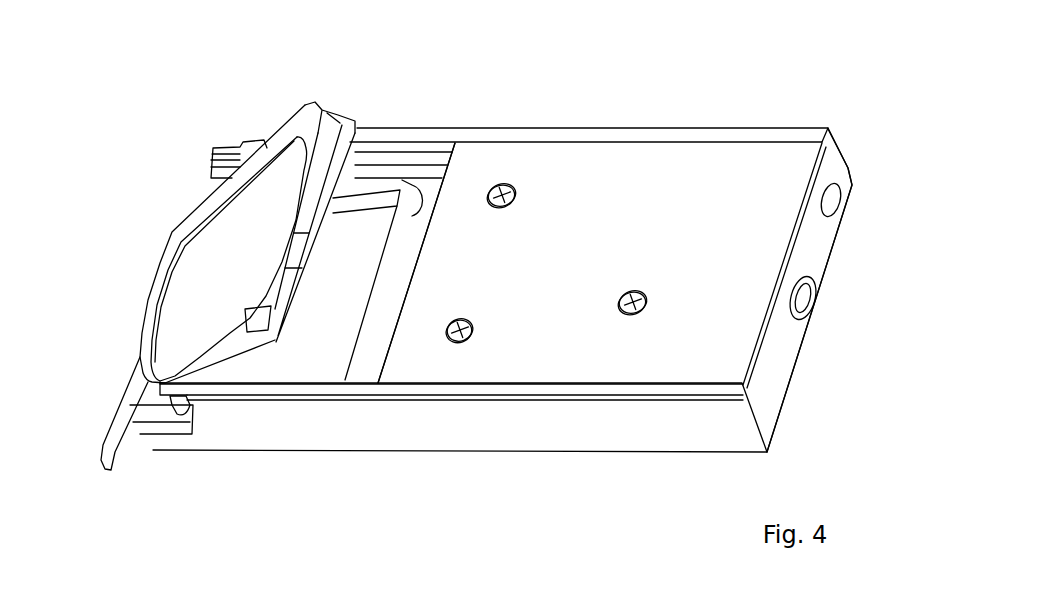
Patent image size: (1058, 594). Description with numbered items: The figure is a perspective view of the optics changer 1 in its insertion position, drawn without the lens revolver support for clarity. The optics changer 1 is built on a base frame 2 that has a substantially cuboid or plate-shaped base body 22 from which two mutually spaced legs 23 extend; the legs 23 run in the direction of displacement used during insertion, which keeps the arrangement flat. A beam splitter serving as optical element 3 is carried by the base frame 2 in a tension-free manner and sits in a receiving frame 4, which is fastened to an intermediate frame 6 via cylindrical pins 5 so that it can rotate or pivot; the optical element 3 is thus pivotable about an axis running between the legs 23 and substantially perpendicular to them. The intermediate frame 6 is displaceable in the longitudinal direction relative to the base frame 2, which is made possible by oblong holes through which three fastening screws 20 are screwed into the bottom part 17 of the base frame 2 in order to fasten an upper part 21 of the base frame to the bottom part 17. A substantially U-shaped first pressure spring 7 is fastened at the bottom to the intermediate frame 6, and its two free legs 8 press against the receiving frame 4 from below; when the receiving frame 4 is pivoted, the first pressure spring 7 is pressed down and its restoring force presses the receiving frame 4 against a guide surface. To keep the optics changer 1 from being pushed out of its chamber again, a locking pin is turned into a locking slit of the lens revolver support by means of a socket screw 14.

The optics changer 1 is at (524, 121).
The base frame 2 is at (500, 449).
The optical element 3 is at (227, 228).
The receiving frame 4 is at (104, 445).
The cylindrical pins 5 is at (257, 138).
The intermediate frame 6 is at (156, 410).
The first pressure spring 7 is at (373, 303).
The free legs 8 is at (392, 192).
The socket screw 14 is at (808, 320).
The bottom part 17 is at (585, 418).
The fastening screws 20 is at (497, 185).
The upper part 21 is at (776, 178).
The base body 22 is at (692, 172).
The legs 23 is at (361, 125).